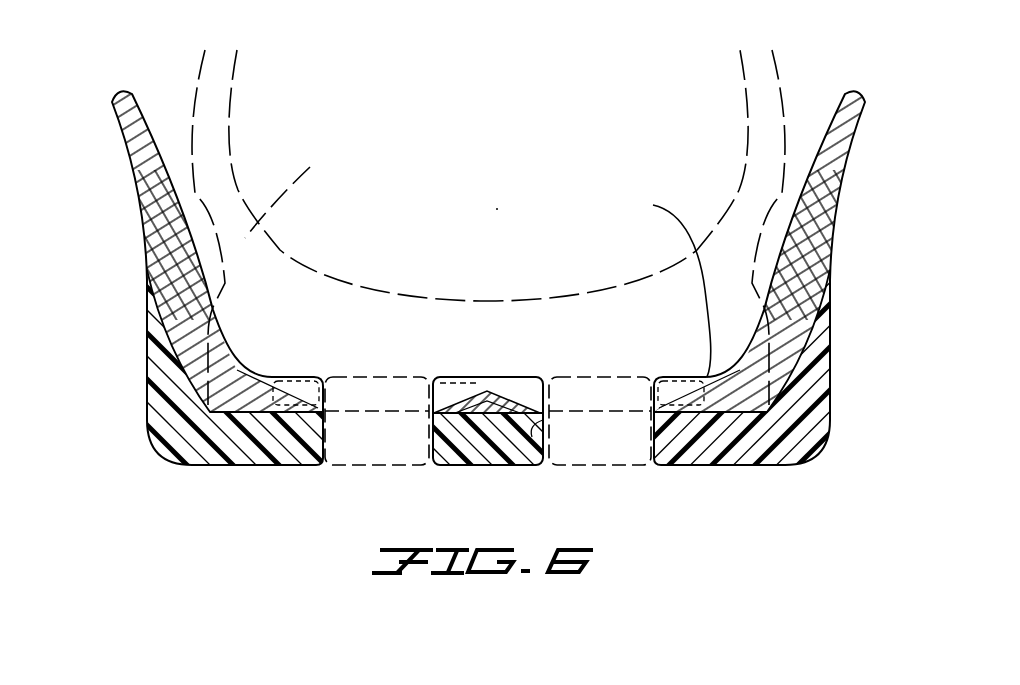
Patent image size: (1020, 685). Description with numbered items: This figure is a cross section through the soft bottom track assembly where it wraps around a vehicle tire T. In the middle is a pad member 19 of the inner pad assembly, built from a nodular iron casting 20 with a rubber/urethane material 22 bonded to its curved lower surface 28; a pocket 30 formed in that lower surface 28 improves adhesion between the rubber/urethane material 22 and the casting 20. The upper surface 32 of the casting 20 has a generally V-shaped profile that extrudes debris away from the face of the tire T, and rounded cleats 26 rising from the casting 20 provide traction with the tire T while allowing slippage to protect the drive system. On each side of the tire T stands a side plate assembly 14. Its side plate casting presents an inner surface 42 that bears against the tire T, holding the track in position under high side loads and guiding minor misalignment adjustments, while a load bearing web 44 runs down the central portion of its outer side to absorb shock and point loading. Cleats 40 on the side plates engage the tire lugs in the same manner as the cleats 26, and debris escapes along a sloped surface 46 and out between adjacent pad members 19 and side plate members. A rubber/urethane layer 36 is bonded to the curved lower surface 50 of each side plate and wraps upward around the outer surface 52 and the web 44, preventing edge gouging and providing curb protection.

The side plate assembly 14 is at (168, 462).
The pad member 19 is at (372, 378).
The nodular iron casting 20 is at (453, 390).
The rubber/urethane material 22 is at (532, 455).
The cleats 26 is at (490, 388).
The lower surface 28 is at (545, 422).
The pocket 30 is at (455, 467).
The upper surface 32 is at (494, 388).
The rubber/urethane layer 36 is at (165, 400).
The cleats 40 is at (298, 377).
The inner surface 42 is at (187, 237).
The load bearing web 44 is at (170, 290).
The sloped surface 46 is at (661, 285).
The lower surface 50 is at (220, 447).
The outer surface 52 is at (168, 256).
The tire T is at (287, 198).